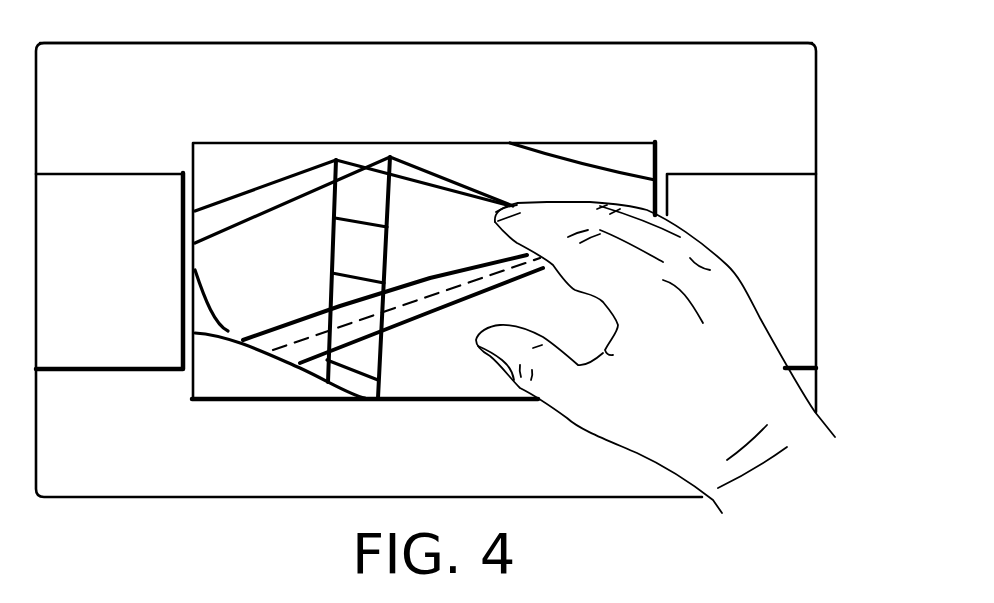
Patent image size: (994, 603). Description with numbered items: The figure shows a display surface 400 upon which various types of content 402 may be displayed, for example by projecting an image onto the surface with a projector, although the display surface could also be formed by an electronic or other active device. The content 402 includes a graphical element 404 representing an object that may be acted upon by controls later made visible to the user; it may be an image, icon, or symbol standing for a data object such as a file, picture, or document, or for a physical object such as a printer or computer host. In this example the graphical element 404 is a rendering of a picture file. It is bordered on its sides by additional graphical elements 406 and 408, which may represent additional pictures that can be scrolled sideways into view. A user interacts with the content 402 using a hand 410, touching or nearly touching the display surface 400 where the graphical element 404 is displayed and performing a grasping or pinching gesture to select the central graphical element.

The display surface 400 is at (183, 42).
The content 402 is at (632, 44).
The graphical element 404 is at (272, 147).
The additional graphical element 406 is at (111, 177).
The additional graphical element 408 is at (740, 178).
The hand 410 is at (588, 423).